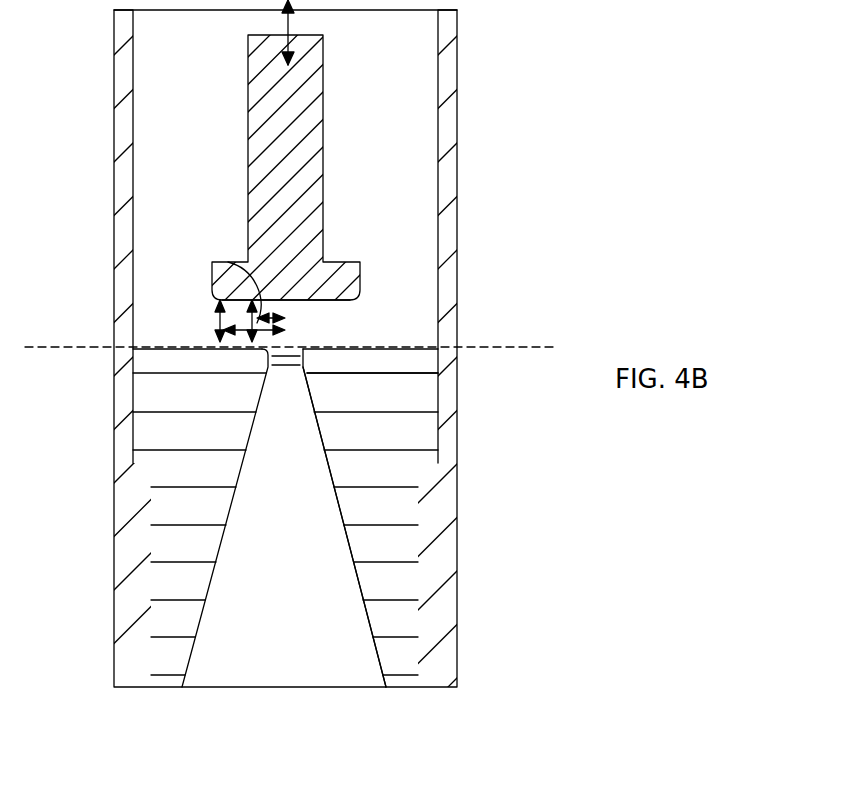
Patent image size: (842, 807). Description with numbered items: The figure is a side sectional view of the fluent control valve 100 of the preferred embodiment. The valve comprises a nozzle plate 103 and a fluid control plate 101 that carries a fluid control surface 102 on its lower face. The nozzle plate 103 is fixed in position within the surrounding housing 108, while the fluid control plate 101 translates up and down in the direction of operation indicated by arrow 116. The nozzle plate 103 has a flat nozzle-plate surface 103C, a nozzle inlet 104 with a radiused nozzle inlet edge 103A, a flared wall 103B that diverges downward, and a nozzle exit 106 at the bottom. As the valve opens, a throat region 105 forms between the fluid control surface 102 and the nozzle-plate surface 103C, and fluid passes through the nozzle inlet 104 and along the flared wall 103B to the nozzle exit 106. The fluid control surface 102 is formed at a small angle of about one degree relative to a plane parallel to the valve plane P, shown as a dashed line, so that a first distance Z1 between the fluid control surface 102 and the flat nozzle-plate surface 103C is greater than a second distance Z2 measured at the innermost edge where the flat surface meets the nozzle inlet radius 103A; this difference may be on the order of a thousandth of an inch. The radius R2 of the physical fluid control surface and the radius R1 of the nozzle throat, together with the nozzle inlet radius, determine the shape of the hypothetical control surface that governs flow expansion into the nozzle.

The fluent control valve (FCV) 100 is at (569, 186).
The fluid control plate 101 is at (307, 282).
The fluid control surface (FCS) 102 is at (342, 300).
The nozzle plate 103 is at (360, 508).
The radiused nozzle inlet edge 103A is at (305, 352).
The flared wall 103B is at (358, 573).
The flat nozzle-plate surface 103C is at (348, 347).
The nozzle inlet 104 is at (338, 333).
The throat region 105 is at (315, 327).
The nozzle exit 106 is at (362, 682).
The housing 108 is at (163, 182).
The arrow indicating direction of operation 116 is at (288, 30).
The valve plane P is at (92, 350).
The radius of the nozzle throat R1 is at (255, 302).
The radius of the physical fluid control surface R2 is at (250, 306).
The first distance Z1 is at (218, 313).
The second distance Z2 is at (262, 305).